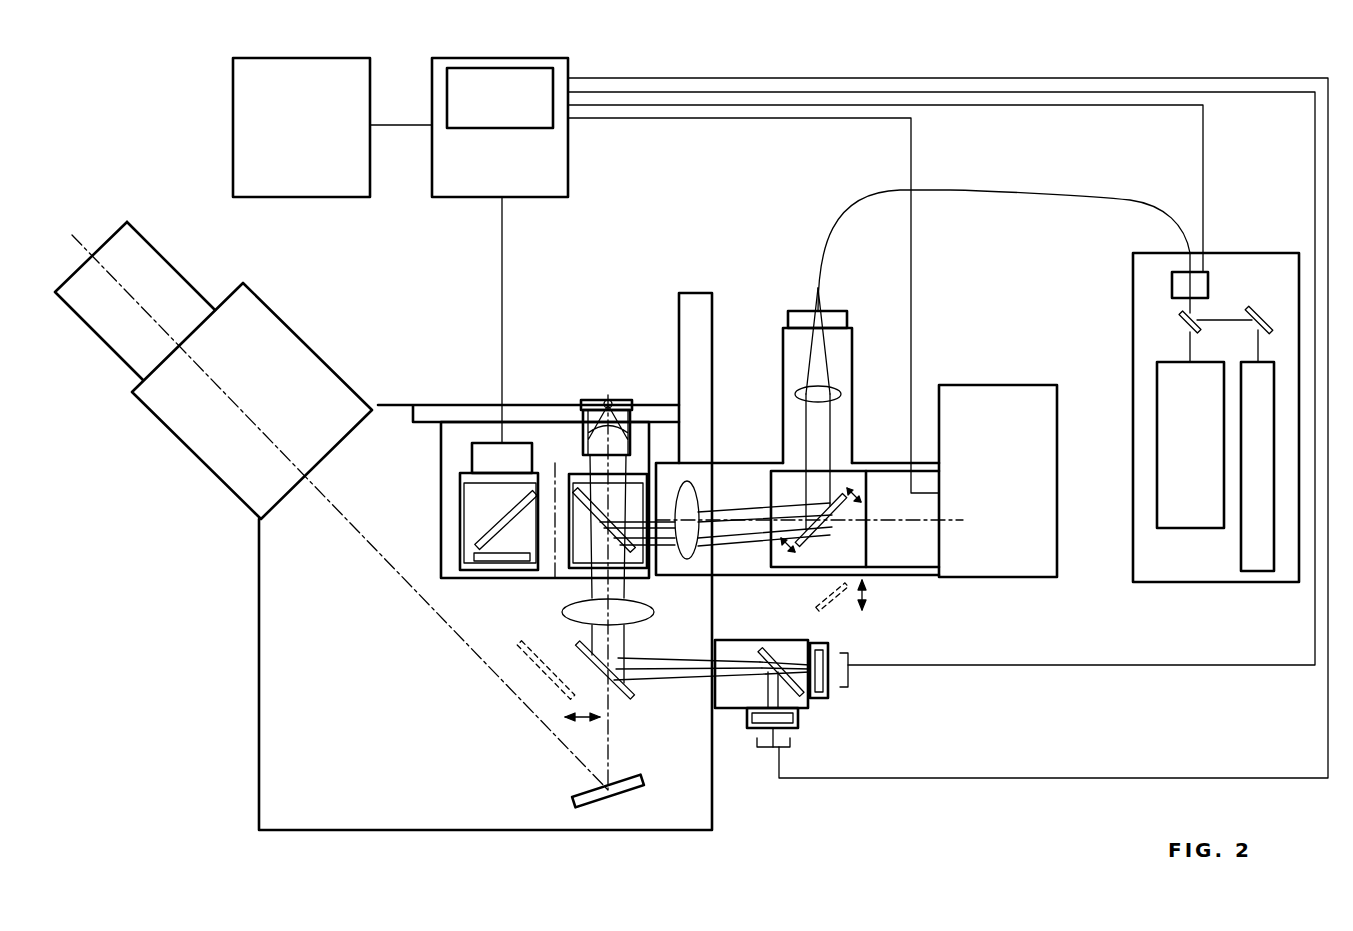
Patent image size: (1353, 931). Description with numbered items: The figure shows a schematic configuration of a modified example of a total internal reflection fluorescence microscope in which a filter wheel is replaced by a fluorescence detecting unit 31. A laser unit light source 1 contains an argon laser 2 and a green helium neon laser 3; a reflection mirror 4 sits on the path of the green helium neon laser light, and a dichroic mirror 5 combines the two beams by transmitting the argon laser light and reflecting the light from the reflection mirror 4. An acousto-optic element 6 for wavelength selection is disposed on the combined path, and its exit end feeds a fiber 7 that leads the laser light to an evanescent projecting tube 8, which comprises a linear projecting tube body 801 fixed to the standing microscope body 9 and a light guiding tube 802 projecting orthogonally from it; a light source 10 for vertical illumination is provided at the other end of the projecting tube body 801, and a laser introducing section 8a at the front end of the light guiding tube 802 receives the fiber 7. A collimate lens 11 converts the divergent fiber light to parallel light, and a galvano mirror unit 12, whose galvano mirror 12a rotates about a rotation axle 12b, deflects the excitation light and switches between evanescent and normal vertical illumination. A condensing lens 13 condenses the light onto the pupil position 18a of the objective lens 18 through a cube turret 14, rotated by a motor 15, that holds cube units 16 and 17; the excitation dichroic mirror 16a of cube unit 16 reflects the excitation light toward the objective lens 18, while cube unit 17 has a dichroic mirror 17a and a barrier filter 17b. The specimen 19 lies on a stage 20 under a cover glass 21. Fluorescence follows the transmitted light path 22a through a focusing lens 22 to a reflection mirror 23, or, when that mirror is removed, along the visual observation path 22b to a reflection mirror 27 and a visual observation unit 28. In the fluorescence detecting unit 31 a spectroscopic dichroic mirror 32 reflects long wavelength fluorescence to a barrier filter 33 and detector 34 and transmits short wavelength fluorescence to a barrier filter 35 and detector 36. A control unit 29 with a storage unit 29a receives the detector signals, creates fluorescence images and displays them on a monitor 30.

The laser unit light source 1 is at (1214, 582).
The argon laser 2 is at (1157, 512).
The green helium neon laser 3 is at (1256, 575).
The reflection mirror 4 is at (1259, 311).
The dichroic mirror 5 is at (1180, 317).
The acousto-optic element 6 is at (1209, 286).
The fiber 7 is at (1052, 194).
The evanescent projecting tube 8 is at (766, 458).
The laser introducing section 8a is at (847, 320).
The standing microscope body 9 is at (259, 673).
The light source for vertical illumination 10 is at (1013, 385).
The collimate lens 11 is at (838, 396).
The galvano mirror unit 12 is at (853, 492).
The galvano mirror 12a is at (803, 548).
The rotation axle 12b is at (830, 523).
The condensing lens 13 is at (690, 499).
The cube turret 14 is at (545, 578).
The motor 15 is at (510, 443).
The cube unit 16 is at (640, 578).
The excitation dichroic mirror 16a is at (578, 492).
The cube unit 17 is at (470, 515).
The dichroic mirror 17a is at (500, 515).
The barrier filter 17b is at (480, 557).
The objective lens 18 is at (632, 440).
The pupil position 18a is at (630, 440).
The specimen 19 is at (608, 400).
The stage 20 is at (461, 405).
The cover glass 21 is at (590, 400).
The focusing lens 22 is at (654, 612).
The transmitted light path 22a is at (612, 640).
The visual observation path 22b is at (610, 766).
The reflection mirror 23 is at (633, 697).
The reflection mirror 27 is at (640, 784).
The visual observation unit 28 is at (292, 340).
The control unit 29 is at (476, 58).
The storage unit 29a is at (541, 68).
The monitor 30 is at (318, 58).
The fluorescence detecting unit 31 is at (838, 700).
The spectroscopic dichroic mirror 32 is at (800, 700).
The barrier filter 33 is at (752, 732).
The detector 34 is at (763, 750).
The barrier filter 35 is at (830, 650).
The detector 36 is at (850, 661).
The projecting tube body 801 is at (920, 568).
The light guiding tube 802 is at (840, 420).